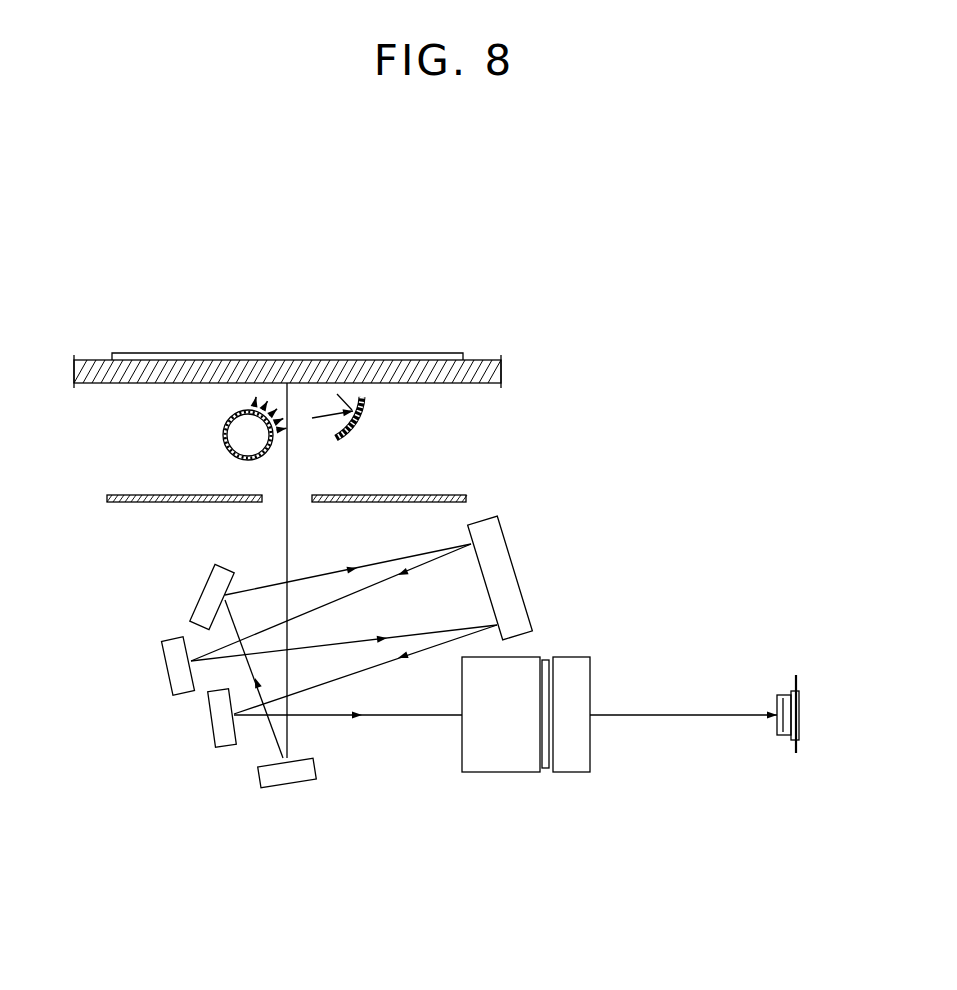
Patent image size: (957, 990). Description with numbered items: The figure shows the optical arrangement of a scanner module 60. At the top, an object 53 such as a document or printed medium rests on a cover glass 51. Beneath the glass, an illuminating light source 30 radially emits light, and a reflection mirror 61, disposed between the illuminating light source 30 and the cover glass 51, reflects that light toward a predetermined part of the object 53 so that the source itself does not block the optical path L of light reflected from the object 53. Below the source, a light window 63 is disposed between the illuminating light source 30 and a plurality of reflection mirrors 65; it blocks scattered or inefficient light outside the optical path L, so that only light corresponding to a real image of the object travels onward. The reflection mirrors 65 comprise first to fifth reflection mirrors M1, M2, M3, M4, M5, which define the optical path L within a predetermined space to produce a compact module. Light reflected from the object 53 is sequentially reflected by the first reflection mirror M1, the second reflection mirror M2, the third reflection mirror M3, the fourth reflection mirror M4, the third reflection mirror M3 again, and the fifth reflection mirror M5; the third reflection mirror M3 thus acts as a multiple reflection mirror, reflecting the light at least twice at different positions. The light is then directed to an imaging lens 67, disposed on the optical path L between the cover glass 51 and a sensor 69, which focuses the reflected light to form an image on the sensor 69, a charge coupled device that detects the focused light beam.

The scanner module 60 is at (665, 400).
The cover glass 51 is at (502, 372).
The object 53 is at (419, 357).
The illuminating light source 30 is at (216, 441).
The reflection mirror 61 is at (357, 430).
The light window 63 is at (437, 495).
The optical path L is at (283, 546).
The first reflection mirror M1 is at (298, 782).
The second reflection mirror M2 is at (212, 582).
The third reflection mirror M3 is at (522, 602).
The fourth reflection mirror M4 is at (172, 680).
The fifth reflection mirror M5 is at (212, 730).
The reflection mirrors 65 is at (522, 545).
The imaging lens 67 is at (498, 773).
The sensor 69 is at (783, 738).